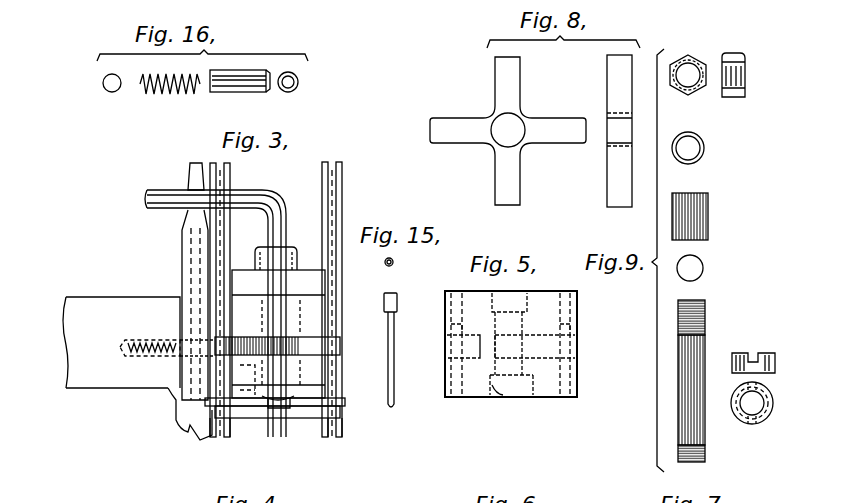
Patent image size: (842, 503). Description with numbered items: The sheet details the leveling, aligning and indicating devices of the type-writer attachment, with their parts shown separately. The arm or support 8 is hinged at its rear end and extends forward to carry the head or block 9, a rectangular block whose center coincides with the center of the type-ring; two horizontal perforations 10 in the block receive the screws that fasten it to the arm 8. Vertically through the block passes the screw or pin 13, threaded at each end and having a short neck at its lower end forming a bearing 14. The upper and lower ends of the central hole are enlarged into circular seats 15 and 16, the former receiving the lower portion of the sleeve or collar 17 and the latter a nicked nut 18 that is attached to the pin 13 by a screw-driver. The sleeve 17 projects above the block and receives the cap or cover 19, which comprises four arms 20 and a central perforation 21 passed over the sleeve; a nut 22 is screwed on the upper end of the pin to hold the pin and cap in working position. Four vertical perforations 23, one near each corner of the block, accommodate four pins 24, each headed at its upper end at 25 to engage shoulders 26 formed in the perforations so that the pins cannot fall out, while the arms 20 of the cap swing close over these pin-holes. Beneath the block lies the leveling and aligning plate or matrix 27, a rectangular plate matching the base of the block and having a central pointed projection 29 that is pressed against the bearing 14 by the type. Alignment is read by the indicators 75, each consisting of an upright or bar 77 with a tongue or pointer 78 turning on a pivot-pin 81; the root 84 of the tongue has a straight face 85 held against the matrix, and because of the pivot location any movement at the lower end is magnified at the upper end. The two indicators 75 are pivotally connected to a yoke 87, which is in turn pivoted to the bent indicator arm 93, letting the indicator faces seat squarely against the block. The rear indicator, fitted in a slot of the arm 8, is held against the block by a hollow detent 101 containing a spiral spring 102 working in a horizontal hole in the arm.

In FIG. 3, the arm or support 8 is at (121, 342).
In FIG. 3, the head or block 9 is at (278, 334).
In FIG. 5, the head or block 9 is at (472, 397).
In FIG. 5, the horizontal perforations 10 is at (572, 350).
In FIG. 9, the screw or pin 13 is at (701, 350).
In FIG. 3, the bearing 14 is at (286, 408).
In FIG. 9, the bearing 14 is at (691, 389).
In FIG. 5, the circular seat 15 is at (511, 338).
In FIG. 5, the circular seat 16 is at (500, 397).
In FIG. 9, the sleeve or collar 17 is at (700, 186).
In FIG. 9, the nut 18 is at (760, 388).
In FIG. 8, the cap or cover 19 is at (581, 131).
In FIG. 8, the arms 20 is at (515, 134).
In FIG. 8, the central perforation 21 is at (637, 131).
In FIG. 3, the nut 22 is at (286, 258).
In FIG. 9, the nut 22 is at (707, 81).
In FIG. 5, the vertical perforations 23 is at (460, 397).
In FIG. 15, the pins 24 is at (393, 339).
In FIG. 15, the head 25 is at (394, 264).
In FIG. 5, the shoulders 26 is at (452, 328).
In FIG. 3, the leveling and aligning plate or matrix 27 is at (238, 418).
In FIG. 3, the pointed projection 29 is at (278, 410).
In FIG. 3, the indicators 75 is at (231, 184).
In FIG. 3, the upright or bar 77 is at (349, 192).
In FIG. 3, the tongue or pointer 78 is at (222, 164).
In FIG. 3, the pivot-pin 81 is at (345, 402).
In FIG. 3, the root of the tongue 84 is at (340, 430).
In FIG. 3, the straight face 85 is at (205, 418).
In FIG. 3, the yoke 87 is at (330, 346).
In FIG. 3, the indicator arm or support 93 is at (225, 313).
In FIG. 16, the detent 101 is at (232, 91).
In FIG. 3, the detent 101 is at (180, 358).
In FIG. 16, the spiral spring 102 is at (110, 93).
In FIG. 3, the spiral spring 102 is at (150, 338).